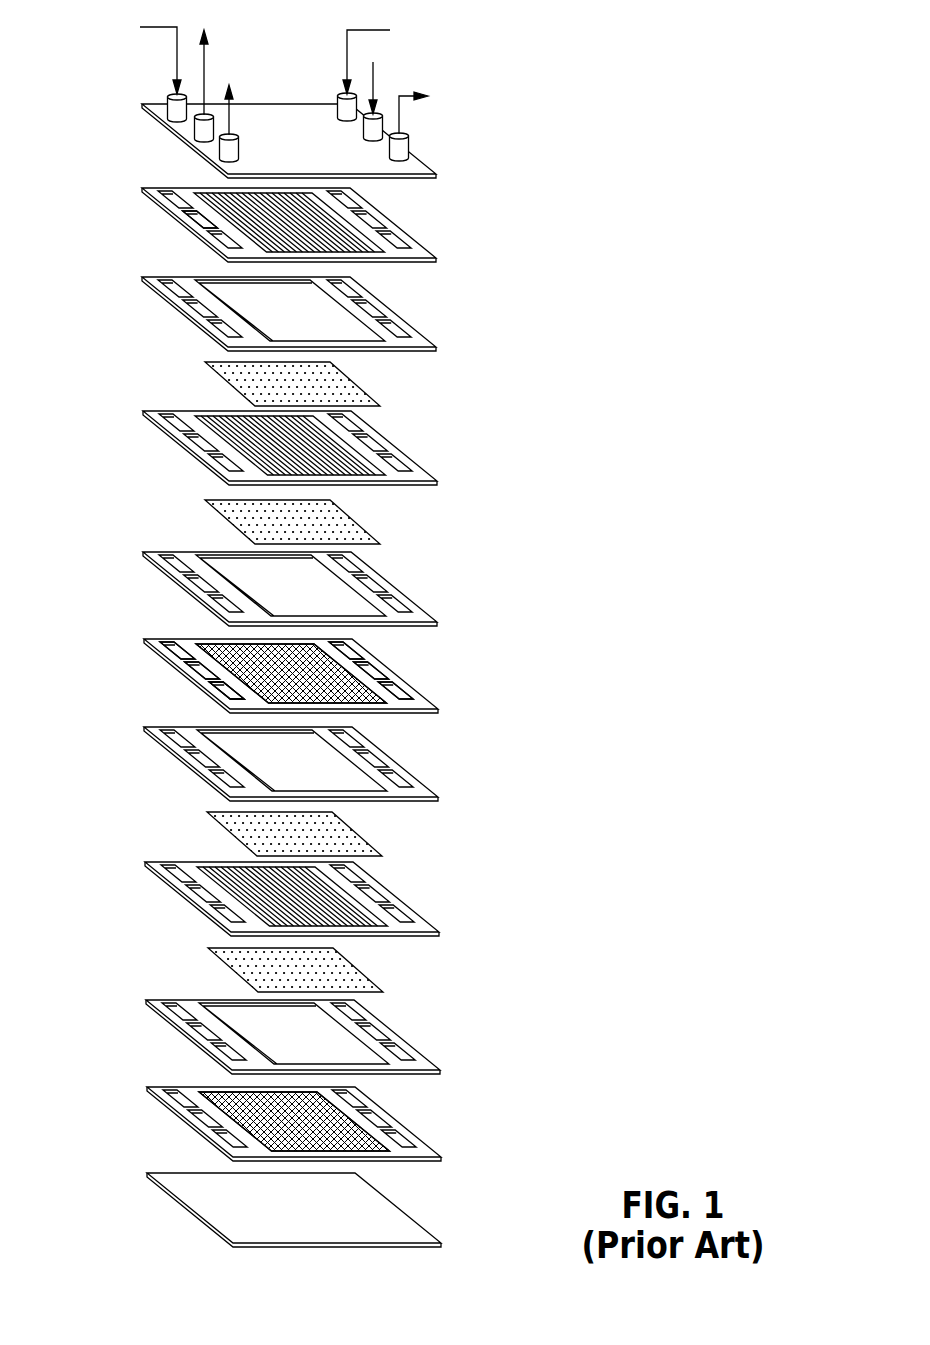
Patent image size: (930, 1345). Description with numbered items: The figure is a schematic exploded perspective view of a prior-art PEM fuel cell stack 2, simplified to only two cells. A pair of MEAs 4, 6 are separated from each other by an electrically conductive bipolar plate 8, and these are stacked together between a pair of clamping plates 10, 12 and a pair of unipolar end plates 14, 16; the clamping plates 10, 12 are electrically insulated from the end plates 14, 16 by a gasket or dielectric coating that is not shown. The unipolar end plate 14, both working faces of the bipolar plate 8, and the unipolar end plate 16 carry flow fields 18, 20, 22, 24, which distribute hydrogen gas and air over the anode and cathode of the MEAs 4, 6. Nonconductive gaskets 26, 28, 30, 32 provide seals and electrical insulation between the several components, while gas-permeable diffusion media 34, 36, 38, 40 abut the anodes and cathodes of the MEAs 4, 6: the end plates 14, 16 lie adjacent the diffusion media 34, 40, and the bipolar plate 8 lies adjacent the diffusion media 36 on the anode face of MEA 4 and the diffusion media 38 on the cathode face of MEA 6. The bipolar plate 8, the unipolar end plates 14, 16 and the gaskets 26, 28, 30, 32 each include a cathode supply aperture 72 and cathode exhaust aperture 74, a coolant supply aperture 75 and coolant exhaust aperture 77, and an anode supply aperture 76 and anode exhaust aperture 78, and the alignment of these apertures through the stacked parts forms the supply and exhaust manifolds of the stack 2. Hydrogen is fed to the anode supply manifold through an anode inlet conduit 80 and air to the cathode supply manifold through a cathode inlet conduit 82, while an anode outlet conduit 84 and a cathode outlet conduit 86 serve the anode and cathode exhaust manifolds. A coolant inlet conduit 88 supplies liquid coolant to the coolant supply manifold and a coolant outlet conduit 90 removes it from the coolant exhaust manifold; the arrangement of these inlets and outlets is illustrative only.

The fuel cell stack 2 is at (547, 408).
The MEA 4 is at (177, 447).
The MEA 6 is at (398, 892).
The bipolar plate 8 is at (158, 660).
The clamping plate 10 is at (176, 139).
The clamping plate 12 is at (415, 1214).
The unipolar end plate 14 is at (176, 221).
The unipolar end plate 16 is at (386, 1103).
The flow field 18 is at (178, 233).
The flow field 20 is at (343, 663).
The flow field 22 is at (237, 697).
The flow field 24 is at (367, 1137).
The nonconductive gasket 26 is at (183, 285).
The nonconductive gasket 28 is at (187, 588).
The nonconductive gasket 30 is at (372, 768).
The nonconductive gasket 32 is at (367, 1042).
The gas-permeable diffusion media 34 is at (230, 388).
The gas-permeable diffusion media 36 is at (247, 525).
The gas-permeable diffusion media 38 is at (355, 823).
The gas-permeable diffusion media 40 is at (357, 963).
The cathode supply aperture 72 is at (173, 640).
The cathode exhaust aperture 74 is at (405, 688).
The coolant supply aperture 75 is at (388, 663).
The anode supply aperture 76 is at (345, 641).
The coolant exhaust aperture 77 is at (197, 667).
The anode exhaust aperture 78 is at (222, 703).
The anode inlet conduit 80 is at (340, 110).
The cathode inlet conduit 82 is at (170, 104).
The anode outlet conduit 84 is at (221, 146).
The cathode outlet conduit 86 is at (409, 153).
The coolant inlet conduit 88 is at (383, 128).
The coolant outlet conduit 90 is at (198, 128).